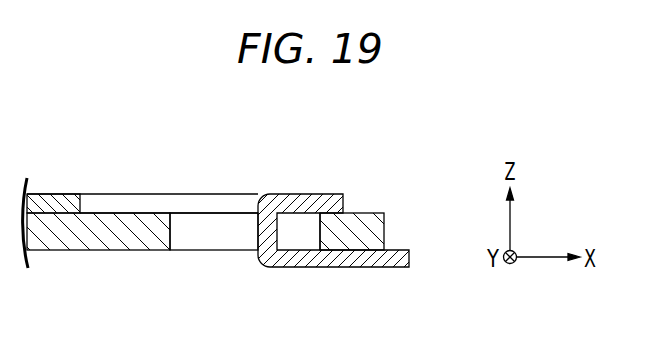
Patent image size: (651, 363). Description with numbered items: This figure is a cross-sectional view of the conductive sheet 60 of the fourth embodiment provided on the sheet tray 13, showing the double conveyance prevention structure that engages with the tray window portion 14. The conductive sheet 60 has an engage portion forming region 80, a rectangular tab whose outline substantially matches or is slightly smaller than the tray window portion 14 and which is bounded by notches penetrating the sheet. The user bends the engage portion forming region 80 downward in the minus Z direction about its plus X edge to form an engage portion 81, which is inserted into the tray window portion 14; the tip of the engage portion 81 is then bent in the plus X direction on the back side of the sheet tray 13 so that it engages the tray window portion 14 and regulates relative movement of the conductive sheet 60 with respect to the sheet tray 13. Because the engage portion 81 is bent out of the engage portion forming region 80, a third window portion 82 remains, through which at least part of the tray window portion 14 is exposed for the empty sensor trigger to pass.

The sheet tray 13 is at (87, 243).
The tray window portion 14 is at (170, 227).
The conductive sheet 60 is at (312, 194).
The engage portion forming region 80 is at (181, 166).
The engage portion 81 is at (318, 262).
The third window portion 82 is at (93, 194).